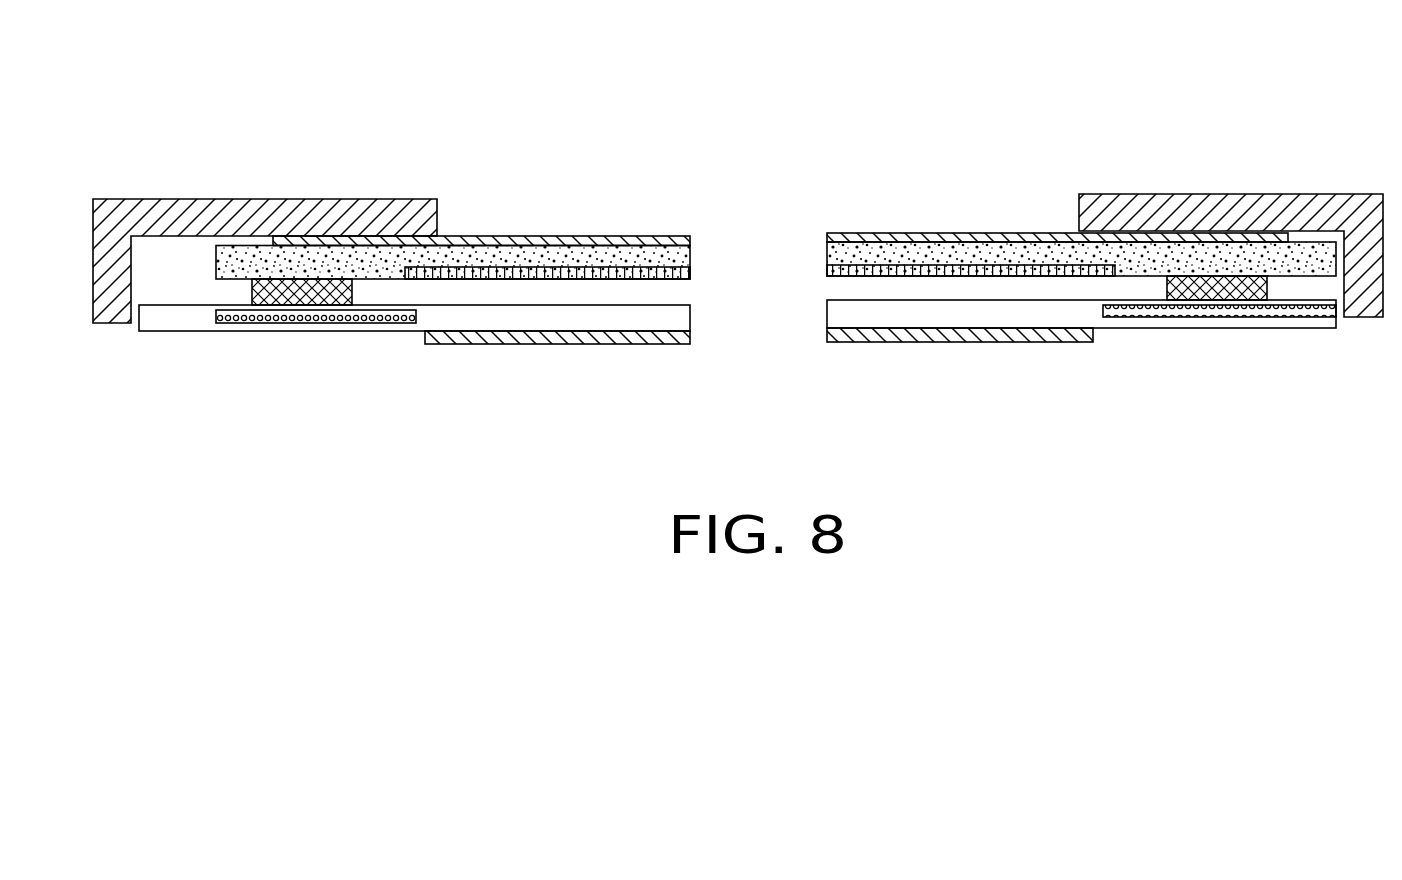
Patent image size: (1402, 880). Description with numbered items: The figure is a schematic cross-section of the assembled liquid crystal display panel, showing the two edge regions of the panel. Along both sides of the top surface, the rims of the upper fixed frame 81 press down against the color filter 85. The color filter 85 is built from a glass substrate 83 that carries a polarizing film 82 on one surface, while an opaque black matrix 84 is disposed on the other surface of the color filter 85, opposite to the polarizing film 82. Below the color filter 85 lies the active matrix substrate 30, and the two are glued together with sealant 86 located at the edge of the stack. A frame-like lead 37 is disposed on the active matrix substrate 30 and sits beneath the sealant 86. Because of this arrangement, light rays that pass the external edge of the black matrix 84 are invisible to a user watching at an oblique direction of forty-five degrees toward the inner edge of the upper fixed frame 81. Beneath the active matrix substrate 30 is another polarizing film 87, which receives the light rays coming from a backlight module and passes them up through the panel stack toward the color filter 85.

The active matrix substrate 30 is at (357, 331).
The frame-like lead 37 is at (260, 322).
The upper fixed frame 81 is at (295, 215).
The polarizing film 82 is at (671, 103).
The glass substrate 83 is at (590, 255).
The opaque black matrix 84 is at (647, 247).
The color filter 85 is at (776, 161).
The sealant 86 is at (252, 293).
The polarizing film 87 is at (568, 338).